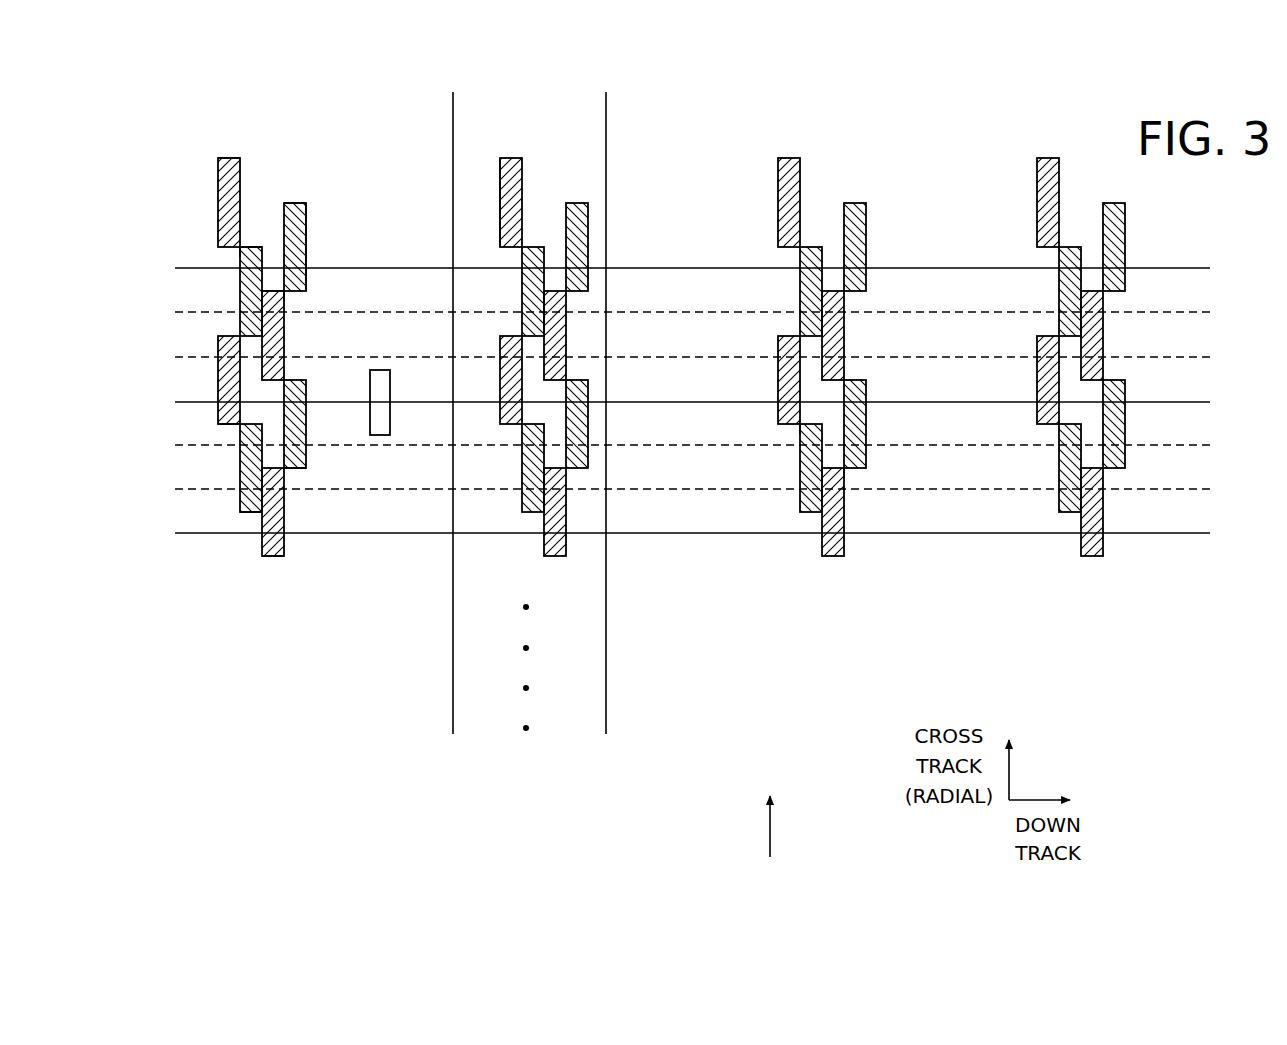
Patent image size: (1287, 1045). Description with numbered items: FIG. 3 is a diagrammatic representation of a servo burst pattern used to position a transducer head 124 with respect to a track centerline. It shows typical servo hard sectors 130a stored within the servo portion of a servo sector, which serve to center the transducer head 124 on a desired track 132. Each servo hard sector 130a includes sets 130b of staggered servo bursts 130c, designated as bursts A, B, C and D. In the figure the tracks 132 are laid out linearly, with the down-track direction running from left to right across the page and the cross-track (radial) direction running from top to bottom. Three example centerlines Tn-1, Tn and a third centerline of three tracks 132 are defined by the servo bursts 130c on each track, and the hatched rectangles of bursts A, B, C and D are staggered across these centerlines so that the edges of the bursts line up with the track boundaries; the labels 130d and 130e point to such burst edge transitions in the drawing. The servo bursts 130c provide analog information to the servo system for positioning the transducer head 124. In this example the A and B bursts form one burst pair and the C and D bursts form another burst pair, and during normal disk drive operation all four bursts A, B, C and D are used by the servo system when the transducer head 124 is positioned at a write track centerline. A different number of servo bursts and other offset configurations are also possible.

The servo hard sector 130a is at (427, 743).
The set of staggered servo bursts 130b is at (353, 95).
The servo burst 130c is at (497, 211).
The burst edge transition 130d is at (236, 251).
The burst edge transition 130e is at (287, 295).
The transducer head 124 is at (388, 420).
The track 132 is at (771, 843).
The burst A is at (231, 157).
The burst B is at (251, 246).
The burst C is at (271, 290).
The burst D is at (295, 202).
The centerline Tn-1 is at (716, 266).
The centerline Tn is at (716, 400).